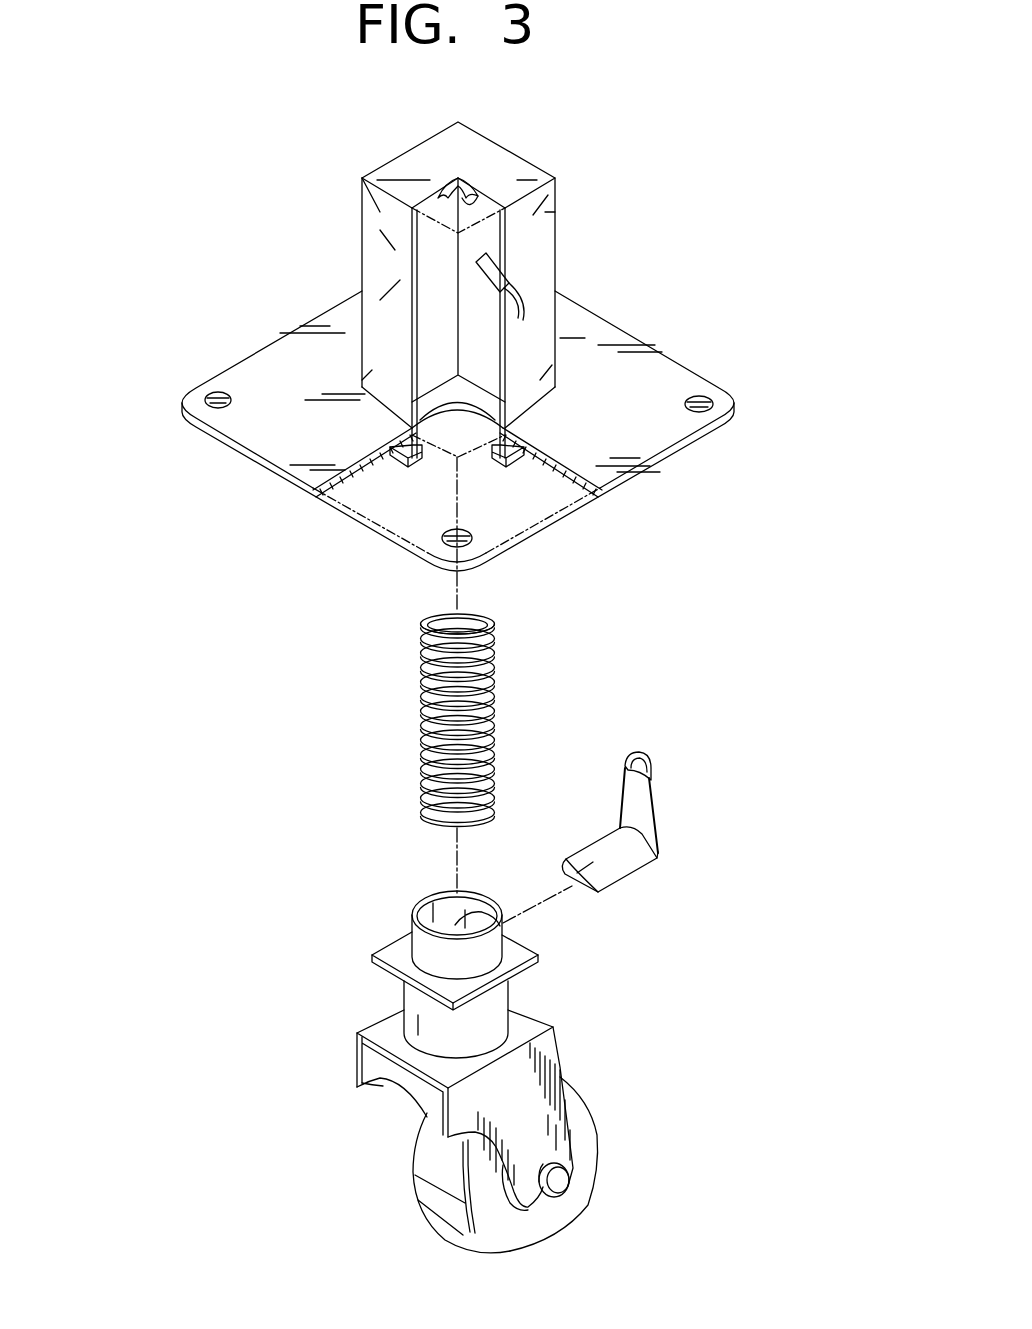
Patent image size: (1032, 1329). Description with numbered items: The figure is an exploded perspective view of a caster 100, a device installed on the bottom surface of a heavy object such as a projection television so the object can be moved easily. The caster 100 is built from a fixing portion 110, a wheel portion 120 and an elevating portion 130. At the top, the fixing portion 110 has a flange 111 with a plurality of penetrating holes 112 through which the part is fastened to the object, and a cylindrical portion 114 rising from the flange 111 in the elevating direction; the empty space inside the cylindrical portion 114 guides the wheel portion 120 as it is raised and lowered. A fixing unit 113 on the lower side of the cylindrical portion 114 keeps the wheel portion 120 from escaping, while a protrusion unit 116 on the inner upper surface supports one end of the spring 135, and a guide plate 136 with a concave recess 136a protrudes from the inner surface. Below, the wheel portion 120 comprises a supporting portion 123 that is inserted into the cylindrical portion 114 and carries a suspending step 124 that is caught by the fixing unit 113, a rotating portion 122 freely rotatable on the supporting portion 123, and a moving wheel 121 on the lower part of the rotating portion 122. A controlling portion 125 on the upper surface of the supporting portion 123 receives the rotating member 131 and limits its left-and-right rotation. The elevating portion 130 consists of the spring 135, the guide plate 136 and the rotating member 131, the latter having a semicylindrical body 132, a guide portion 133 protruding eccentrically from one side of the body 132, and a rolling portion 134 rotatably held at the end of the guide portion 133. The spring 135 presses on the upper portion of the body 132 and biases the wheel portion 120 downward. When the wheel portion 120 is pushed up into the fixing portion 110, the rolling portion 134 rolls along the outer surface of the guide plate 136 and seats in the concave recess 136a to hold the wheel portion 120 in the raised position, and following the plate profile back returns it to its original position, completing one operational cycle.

The caster 100 is at (148, 173).
The fixing portion 110 is at (700, 247).
The flange 111 is at (683, 440).
The penetrating holes 112 is at (702, 396).
The fixing unit 113 is at (417, 467).
The cylindrical portion 114 is at (546, 238).
The protrusion unit 116 is at (493, 196).
The wheel portion 120 is at (650, 1098).
The moving wheel 121 is at (585, 1136).
The rotating portion 122 is at (548, 1065).
The supporting portion 123 is at (500, 1003).
The suspending step 124 is at (538, 957).
The controlling portion 125 is at (415, 903).
The elevating portion 130 is at (787, 712).
The rotating member 131 is at (743, 750).
The body 132 is at (627, 867).
The guide portion 133 is at (650, 812).
The rolling portion 134 is at (653, 773).
The spring 135 is at (487, 703).
The guide plate 136 is at (480, 272).
The concave recess 136a is at (474, 263).